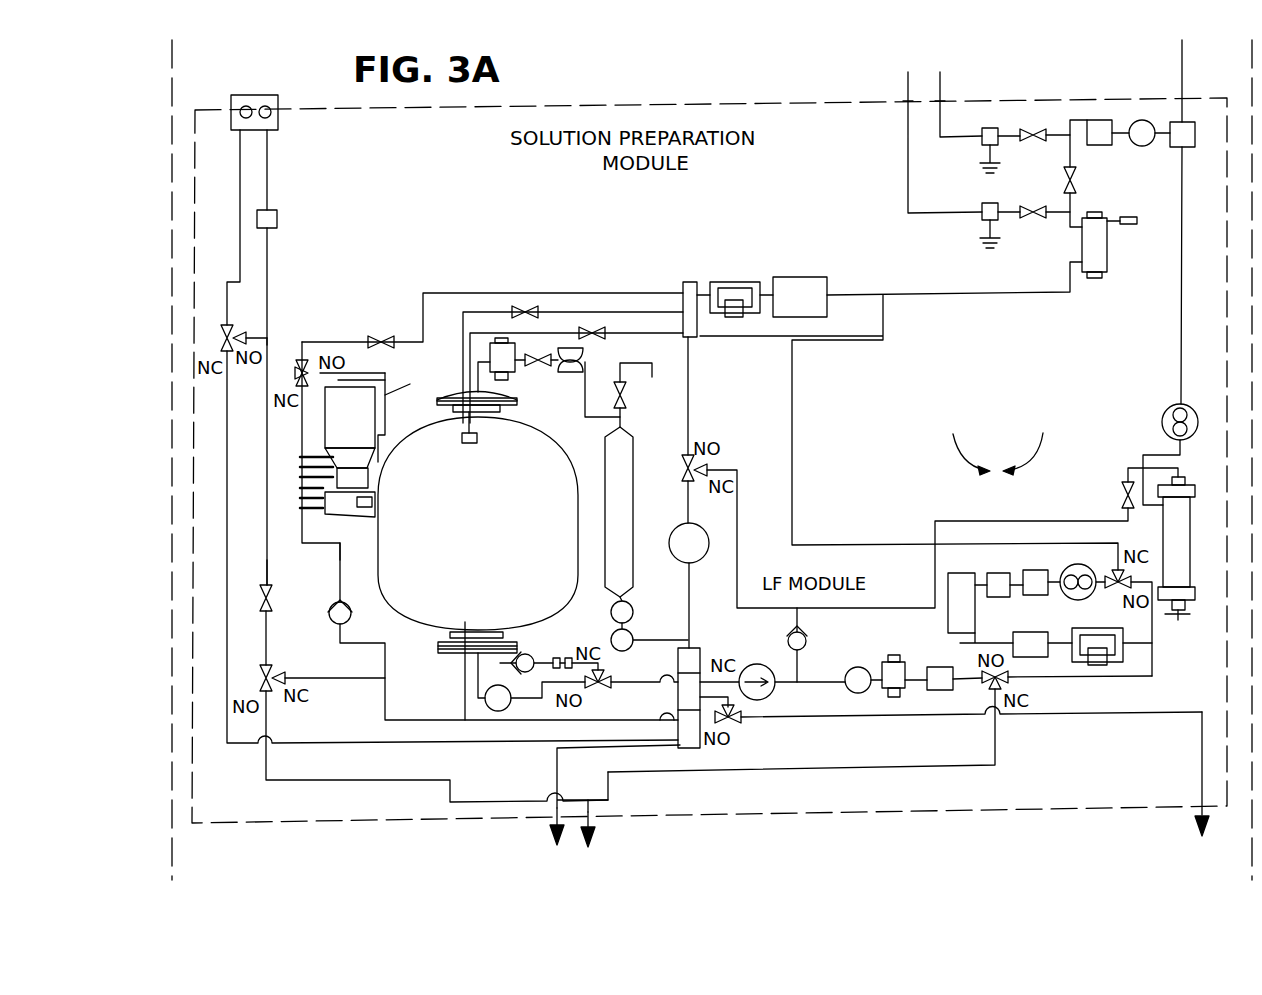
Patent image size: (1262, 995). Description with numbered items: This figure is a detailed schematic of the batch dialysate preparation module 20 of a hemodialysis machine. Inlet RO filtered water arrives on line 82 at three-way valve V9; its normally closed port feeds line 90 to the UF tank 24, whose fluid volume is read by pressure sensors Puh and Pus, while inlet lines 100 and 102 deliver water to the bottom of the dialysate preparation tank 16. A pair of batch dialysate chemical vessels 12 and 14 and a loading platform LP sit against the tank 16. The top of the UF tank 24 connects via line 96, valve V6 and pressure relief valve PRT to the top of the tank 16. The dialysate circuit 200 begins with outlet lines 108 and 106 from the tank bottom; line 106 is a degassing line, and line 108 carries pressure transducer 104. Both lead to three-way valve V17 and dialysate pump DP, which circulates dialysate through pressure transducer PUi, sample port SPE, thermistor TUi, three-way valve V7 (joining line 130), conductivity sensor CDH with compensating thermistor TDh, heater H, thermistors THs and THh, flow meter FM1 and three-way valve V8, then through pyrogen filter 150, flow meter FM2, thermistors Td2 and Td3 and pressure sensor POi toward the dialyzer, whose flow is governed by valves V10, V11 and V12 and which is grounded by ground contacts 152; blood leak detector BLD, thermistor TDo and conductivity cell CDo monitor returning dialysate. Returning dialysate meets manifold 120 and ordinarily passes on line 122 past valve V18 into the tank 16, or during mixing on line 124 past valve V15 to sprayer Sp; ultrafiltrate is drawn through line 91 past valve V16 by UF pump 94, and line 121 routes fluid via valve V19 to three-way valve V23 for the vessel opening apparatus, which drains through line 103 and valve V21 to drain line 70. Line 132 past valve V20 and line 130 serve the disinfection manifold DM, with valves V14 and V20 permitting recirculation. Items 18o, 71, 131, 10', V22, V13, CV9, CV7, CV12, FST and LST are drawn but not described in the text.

The dialysate preparation module 20 is at (263, 823).
The batch dialysate chemicals vessel 12 is at (362, 440).
The batch dialysate chemicals vessel 14 is at (410, 385).
The dialysate preparation tank 16 is at (488, 595).
The electrical conductivity/electrode 18o is at (298, 357).
The UF tank 24 is at (633, 553).
The drain line 70 is at (590, 810).
The line 71 is at (553, 797).
The line 82 is at (1202, 785).
The line 90 is at (670, 640).
The line 91 is at (690, 370).
The UF pump 94 is at (682, 527).
The line 96 is at (585, 417).
The inlet line 100 is at (618, 757).
The inlet line 102 is at (463, 702).
The drain line 103 is at (338, 583).
The pressure transducer 104 is at (497, 713).
The outlet line 106 is at (570, 700).
The outlet line 108 is at (530, 705).
The manifold 120 is at (690, 282).
The fourth line 121 is at (470, 300).
The line 122 is at (460, 300).
The line 124 is at (635, 333).
The line 130 is at (260, 438).
The line 131 is at (262, 340).
The line 132 is at (252, 555).
The pyrogen filter 150 is at (1210, 547).
The ground contacts 152 is at (978, 150).
The dialysate circuit 200 is at (1163, 338).
The line 10' is at (875, 534).
The disinfection manifold DM is at (272, 118).
The valve V20 is at (244, 323).
The three-way valve V23 is at (296, 343).
The valve V19 is at (375, 340).
The valve V18 is at (515, 305).
The valve V6 is at (540, 350).
The valve V15 is at (597, 320).
The valve V22 is at (648, 395).
The valve V16 is at (683, 470).
The valve V14 is at (284, 625).
The valve V21 is at (322, 670).
The three-way valve V17 is at (631, 691).
The three-way valve V9 is at (740, 725).
The three-way valve V7 is at (1010, 680).
The three-way valve V8 is at (1121, 613).
The valve V13 is at (1133, 488).
The bypass valve V11 is at (1042, 144).
The valve V10 is at (1056, 181).
The valve V12 is at (1034, 224).
The check valve CV9 is at (352, 603).
The check valve CV7 is at (552, 645).
The check valve CV12 is at (808, 670).
The pressure relief valve PRT is at (490, 348).
The flow sight tube FST is at (583, 382).
The loading platform LP is at (360, 528).
The sprayer Sp is at (464, 445).
The conductivity cell CDo is at (730, 285).
The dialysate temperature thermistor TDo is at (792, 280).
The dialysate pump DP is at (770, 660).
The pressure transducer PUi is at (850, 692).
The sample removal port SPE is at (920, 630).
The thermistor TUi is at (930, 692).
The heater H is at (980, 608).
The thermistor THs is at (992, 573).
The thermistor THh is at (1043, 570).
The thermistor TDh is at (1037, 632).
The noninvasive conductivity sensor CDH is at (1112, 628).
The flow meter FM1 is at (1078, 563).
The flow meter FM2 is at (1162, 418).
The thermistor Td2 is at (1195, 130).
The thermistor Td3 is at (1107, 145).
The pressure sensor POi is at (1149, 148).
The blood leak detector BLD is at (1110, 240).
The pressure sensor Puh is at (611, 617).
The pressure sensor Pus is at (633, 634).
The level sensor LST is at (981, 454).